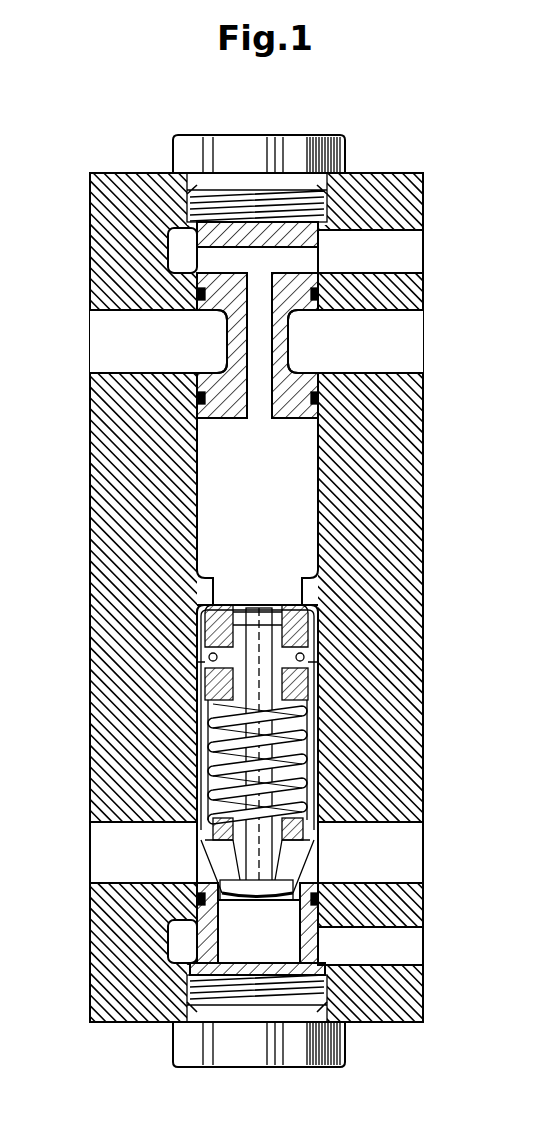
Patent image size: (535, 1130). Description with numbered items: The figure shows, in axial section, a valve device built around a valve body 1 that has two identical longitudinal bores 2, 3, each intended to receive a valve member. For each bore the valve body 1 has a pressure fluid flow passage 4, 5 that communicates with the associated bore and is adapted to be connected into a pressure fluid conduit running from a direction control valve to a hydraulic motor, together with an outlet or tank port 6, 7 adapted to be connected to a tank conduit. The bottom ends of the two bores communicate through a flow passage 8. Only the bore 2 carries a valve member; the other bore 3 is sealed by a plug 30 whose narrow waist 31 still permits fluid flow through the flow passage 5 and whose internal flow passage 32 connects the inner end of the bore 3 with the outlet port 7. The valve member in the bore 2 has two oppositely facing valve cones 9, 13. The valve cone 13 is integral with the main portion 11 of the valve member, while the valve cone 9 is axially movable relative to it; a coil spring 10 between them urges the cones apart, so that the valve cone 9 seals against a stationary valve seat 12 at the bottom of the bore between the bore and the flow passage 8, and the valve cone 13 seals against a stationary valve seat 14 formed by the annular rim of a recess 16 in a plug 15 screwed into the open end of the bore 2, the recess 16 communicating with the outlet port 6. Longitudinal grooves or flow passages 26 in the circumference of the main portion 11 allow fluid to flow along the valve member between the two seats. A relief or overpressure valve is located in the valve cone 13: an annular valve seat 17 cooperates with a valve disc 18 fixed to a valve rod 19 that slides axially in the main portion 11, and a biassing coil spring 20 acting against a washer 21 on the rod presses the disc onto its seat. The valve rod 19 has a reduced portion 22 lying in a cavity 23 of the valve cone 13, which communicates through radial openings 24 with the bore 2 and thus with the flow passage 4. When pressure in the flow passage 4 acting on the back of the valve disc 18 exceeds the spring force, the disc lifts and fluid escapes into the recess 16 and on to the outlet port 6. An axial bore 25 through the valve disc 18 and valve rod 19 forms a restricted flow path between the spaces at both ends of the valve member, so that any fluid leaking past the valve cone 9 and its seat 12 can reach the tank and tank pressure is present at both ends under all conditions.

The valve body 1 is at (110, 460).
The longitudinal bore 2 is at (312, 660).
The longitudinal bore 3 is at (300, 493).
The pressure fluid flow passage 4 is at (108, 872).
The pressure fluid flow passage 5 is at (108, 343).
The outlet or tank port 6 is at (398, 950).
The outlet or tank port 7 is at (400, 265).
The flow passage 8 is at (287, 590).
The valve cone 9 is at (215, 625).
The coil spring 10 is at (213, 657).
The main portion of the valve member 11 is at (305, 822).
The stationary valve seat 12 is at (300, 598).
The valve cone 13 is at (222, 870).
The stationary valve seat 14 is at (205, 893).
The plug 15 is at (258, 1052).
The recess 16 is at (225, 945).
The annular valve seat 17 is at (318, 877).
The valve disc 18 is at (320, 912).
The valve rod 19 is at (213, 690).
The biassing coil spring 20 is at (215, 737).
The washer 21 is at (300, 686).
The reduced portion 22 is at (318, 846).
The cavity 23 is at (318, 862).
The radial openings 24 is at (222, 852).
The axial bore 25 is at (305, 633).
The longitudinal grooves or flow passages 26 is at (312, 763).
The plug 30 is at (235, 150).
The narrow waist 31 is at (300, 347).
The internal flow passage 32 is at (305, 263).